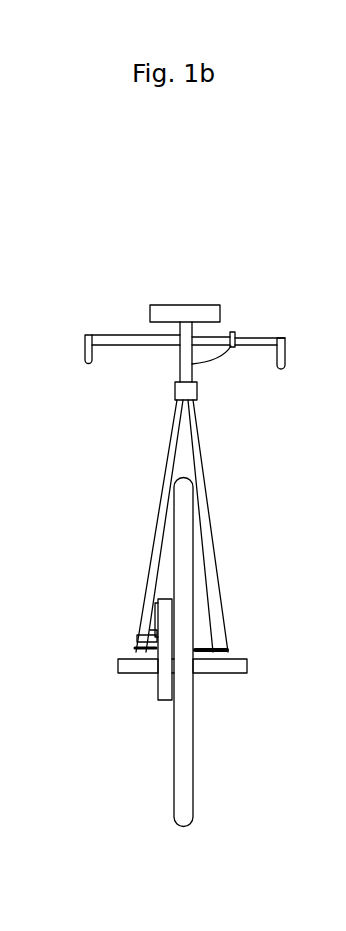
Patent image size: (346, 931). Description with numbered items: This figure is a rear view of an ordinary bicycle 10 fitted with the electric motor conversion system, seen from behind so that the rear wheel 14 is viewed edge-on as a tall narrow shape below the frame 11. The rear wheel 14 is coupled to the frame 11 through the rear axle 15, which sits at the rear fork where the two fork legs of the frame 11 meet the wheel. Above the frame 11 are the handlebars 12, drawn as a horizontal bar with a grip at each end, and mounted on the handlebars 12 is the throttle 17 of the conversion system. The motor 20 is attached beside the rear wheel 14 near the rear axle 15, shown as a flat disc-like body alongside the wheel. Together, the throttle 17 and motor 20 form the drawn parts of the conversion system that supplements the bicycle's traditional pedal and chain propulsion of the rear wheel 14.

The bicycle 10 is at (176, 228).
The frame 11 is at (200, 463).
The handlebars 12 is at (95, 335).
The rear wheel 14 is at (182, 788).
The rear axle 15 is at (205, 648).
The throttle 17 is at (235, 332).
The motor 20 is at (157, 693).